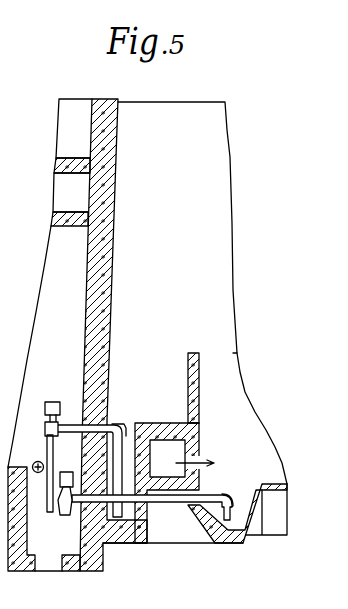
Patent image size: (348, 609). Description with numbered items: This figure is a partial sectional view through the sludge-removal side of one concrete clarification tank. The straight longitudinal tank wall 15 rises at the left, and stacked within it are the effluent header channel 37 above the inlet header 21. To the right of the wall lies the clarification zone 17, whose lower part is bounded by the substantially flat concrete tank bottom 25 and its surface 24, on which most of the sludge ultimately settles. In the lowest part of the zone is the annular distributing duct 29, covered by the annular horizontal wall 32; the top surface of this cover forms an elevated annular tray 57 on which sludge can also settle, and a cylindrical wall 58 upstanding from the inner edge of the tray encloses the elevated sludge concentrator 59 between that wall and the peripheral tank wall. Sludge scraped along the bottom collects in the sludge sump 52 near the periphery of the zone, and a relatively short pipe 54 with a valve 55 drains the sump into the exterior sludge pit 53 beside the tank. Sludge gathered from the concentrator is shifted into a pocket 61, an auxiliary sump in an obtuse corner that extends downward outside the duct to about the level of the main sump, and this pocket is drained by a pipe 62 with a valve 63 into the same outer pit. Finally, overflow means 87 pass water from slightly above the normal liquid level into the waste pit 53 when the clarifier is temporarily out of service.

The longitudinal tank wall 15 is at (116, 274).
The clarification zone 17 is at (174, 206).
The inlet header 21 is at (60, 205).
The surface of the tank bottom 24 is at (267, 468).
The concrete tank bottom 25 is at (266, 509).
The distributing duct 29 is at (170, 478).
The annular horizontal wall 32 is at (197, 427).
The effluent header channel 37 is at (63, 137).
The sludge sump 52 is at (245, 533).
The sludge pit 53 is at (41, 553).
The pipe 54 is at (213, 497).
The valve 55 is at (58, 509).
The annular tray 57 is at (163, 426).
The cylindrical wall 58 is at (199, 370).
The sludge concentrator 59 is at (142, 386).
The pocket 61 is at (127, 455).
The pipe 62 is at (73, 412).
The valve 63 is at (48, 428).
The overflow means 87 is at (40, 458).